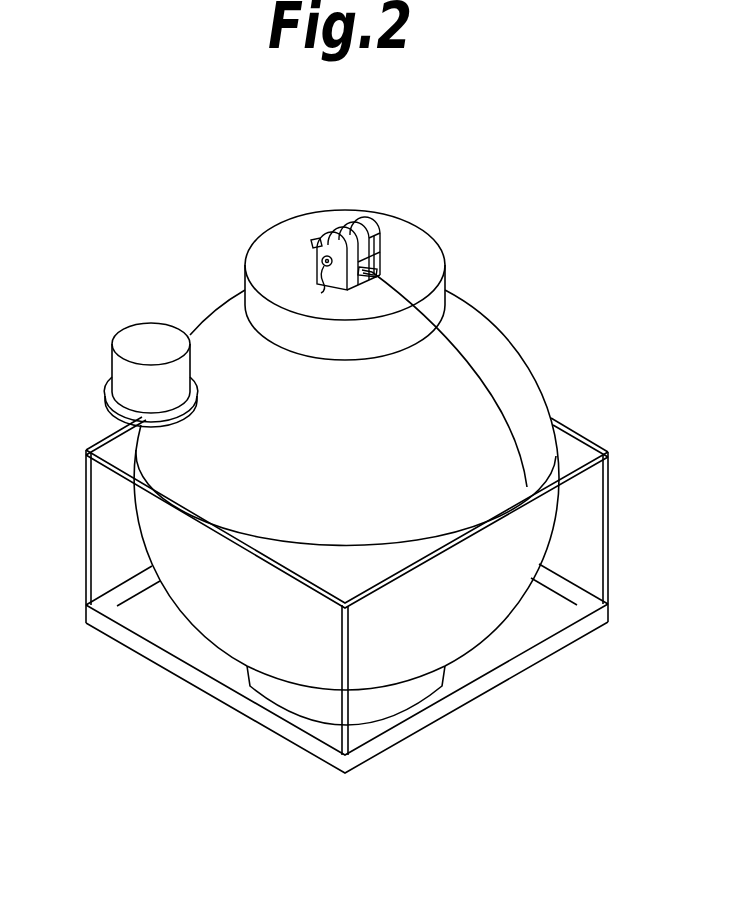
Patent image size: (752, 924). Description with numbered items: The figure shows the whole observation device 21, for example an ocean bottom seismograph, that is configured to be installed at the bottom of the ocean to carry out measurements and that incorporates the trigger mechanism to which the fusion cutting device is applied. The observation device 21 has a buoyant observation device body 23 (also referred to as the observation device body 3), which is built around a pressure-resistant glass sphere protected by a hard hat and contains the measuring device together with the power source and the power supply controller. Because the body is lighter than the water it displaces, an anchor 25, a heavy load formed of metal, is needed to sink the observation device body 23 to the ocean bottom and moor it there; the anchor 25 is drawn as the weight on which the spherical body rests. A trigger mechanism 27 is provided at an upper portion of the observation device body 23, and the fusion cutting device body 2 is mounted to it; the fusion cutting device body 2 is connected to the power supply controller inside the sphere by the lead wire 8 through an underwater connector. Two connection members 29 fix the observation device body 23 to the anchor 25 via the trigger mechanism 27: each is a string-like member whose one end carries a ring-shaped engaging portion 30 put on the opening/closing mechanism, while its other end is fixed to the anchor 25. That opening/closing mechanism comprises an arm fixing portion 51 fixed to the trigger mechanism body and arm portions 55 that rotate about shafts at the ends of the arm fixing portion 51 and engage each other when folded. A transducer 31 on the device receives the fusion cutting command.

The fusion cutting device body 2 is at (322, 257).
The observation device body 3 is at (349, 224).
The lead wire 8 is at (320, 280).
The observation device 21 is at (399, 180).
The observation device body 23 is at (484, 323).
The anchor 25 is at (610, 566).
The trigger mechanism 27 is at (380, 240).
The connection member 29 is at (282, 220).
The engaging portion 30 is at (317, 238).
The transducer 31 is at (111, 357).
The arm fixing portion 51 is at (381, 260).
The arm portion 55 is at (334, 226).